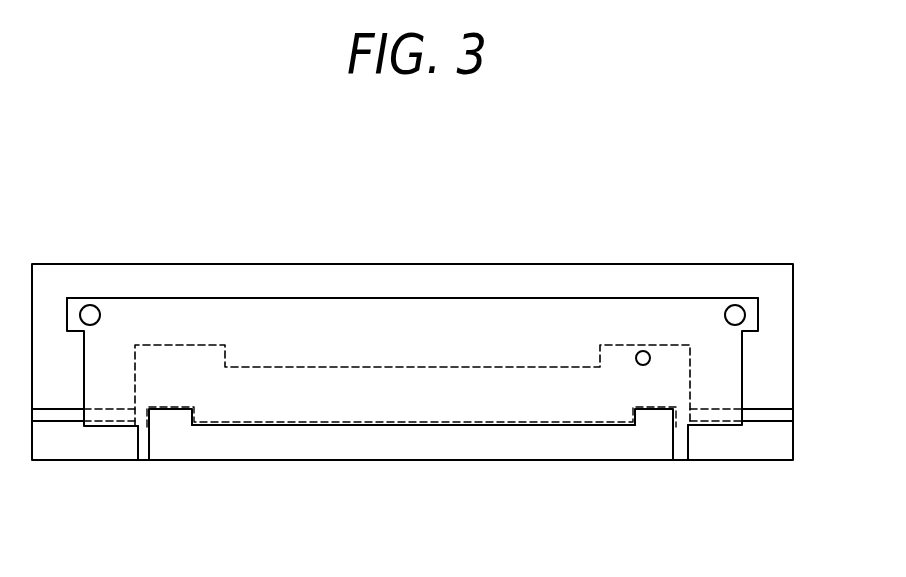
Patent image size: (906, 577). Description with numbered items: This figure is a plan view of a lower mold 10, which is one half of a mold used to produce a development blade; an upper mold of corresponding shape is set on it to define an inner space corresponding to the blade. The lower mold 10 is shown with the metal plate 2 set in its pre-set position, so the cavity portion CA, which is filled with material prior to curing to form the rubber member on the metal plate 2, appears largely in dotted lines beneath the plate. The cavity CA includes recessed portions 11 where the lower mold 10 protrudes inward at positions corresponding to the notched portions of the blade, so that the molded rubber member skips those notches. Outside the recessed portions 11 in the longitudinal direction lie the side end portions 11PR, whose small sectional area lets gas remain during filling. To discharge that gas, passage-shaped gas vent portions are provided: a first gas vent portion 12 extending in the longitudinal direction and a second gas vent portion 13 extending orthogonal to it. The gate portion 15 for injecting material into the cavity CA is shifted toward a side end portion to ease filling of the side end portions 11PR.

The metal plate 2 is at (372, 297).
The lower mold 10 is at (453, 264).
The recessed portion 11 is at (171, 409).
The side end portion 11PR is at (148, 423).
The first gas vent portion 12 is at (62, 413).
The second gas vent portion 13 is at (142, 430).
The gate portion 15 is at (643, 356).
The cavity portion CA is at (397, 424).